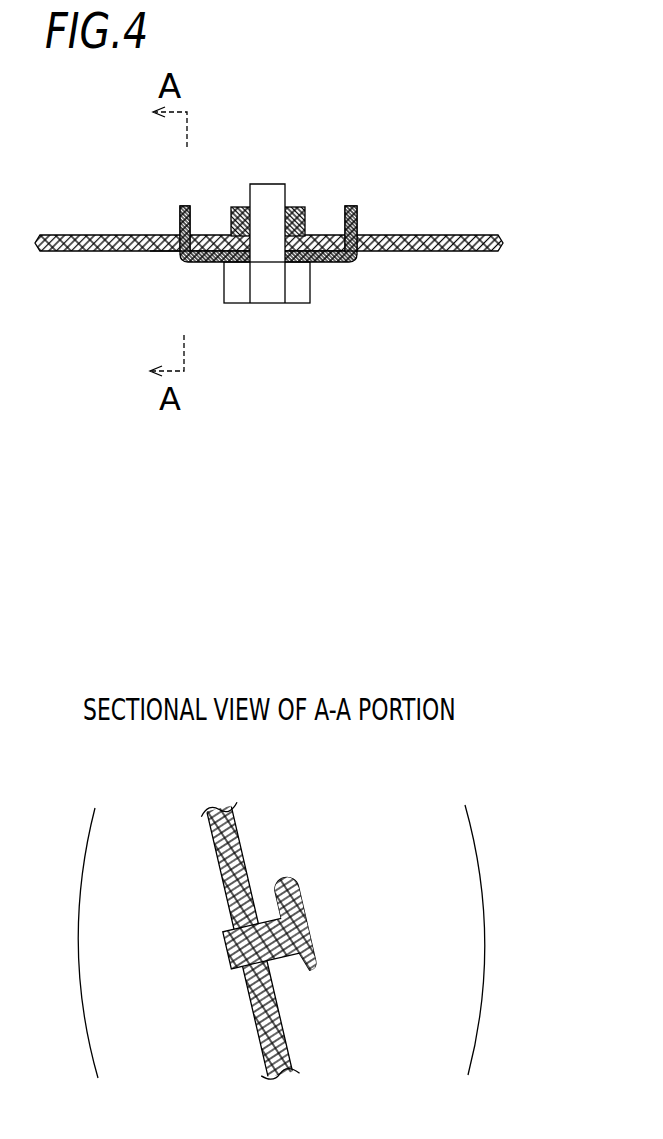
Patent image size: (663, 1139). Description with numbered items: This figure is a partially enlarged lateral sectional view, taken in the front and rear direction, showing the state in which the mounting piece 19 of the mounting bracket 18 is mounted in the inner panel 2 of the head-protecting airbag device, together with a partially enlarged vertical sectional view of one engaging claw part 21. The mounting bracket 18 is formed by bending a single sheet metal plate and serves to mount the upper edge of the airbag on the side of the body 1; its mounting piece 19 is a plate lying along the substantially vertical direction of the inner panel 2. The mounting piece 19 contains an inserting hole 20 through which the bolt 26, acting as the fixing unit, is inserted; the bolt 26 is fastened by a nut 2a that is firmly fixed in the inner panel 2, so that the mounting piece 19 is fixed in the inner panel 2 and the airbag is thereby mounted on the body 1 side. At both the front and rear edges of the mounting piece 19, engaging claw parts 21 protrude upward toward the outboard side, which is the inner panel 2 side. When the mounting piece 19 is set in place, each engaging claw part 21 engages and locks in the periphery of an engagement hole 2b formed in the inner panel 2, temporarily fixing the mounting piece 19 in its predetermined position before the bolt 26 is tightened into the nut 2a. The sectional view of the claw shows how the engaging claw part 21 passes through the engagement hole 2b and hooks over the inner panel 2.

The body 1 is at (272, 175).
The inner panel 2 is at (457, 236).
The nut 2a is at (292, 207).
The engagement hole 2b is at (167, 252).
The mounting bracket 18 is at (288, 520).
The mounting piece 19 is at (327, 263).
The inserting hole 20 is at (261, 258).
The engaging claw part 21 is at (185, 207).
The bolt 26 is at (272, 298).